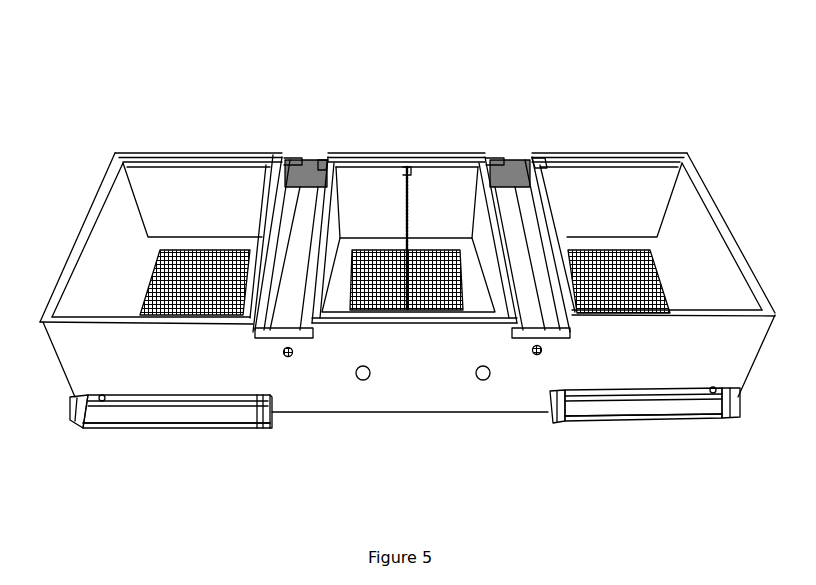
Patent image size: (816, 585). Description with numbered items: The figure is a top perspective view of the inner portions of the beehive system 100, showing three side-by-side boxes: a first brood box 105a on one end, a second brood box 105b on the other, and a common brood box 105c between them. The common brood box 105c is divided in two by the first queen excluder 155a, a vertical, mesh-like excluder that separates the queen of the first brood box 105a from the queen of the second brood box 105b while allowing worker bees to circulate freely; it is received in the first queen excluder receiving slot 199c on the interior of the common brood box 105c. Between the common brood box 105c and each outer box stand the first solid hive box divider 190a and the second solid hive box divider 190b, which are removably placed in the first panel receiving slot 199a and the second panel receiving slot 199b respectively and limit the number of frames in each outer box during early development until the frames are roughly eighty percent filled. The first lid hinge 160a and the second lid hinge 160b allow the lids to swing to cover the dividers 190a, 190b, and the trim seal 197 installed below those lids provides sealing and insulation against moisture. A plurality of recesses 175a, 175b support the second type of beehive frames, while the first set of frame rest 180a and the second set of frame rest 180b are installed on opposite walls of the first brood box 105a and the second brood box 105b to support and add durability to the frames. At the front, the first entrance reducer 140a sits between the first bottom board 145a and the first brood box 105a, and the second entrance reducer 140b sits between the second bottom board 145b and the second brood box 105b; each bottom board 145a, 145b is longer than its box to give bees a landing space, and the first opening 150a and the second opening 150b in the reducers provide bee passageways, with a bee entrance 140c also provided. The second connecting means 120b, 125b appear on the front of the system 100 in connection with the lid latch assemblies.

The beehive system 100 is at (78, 70).
The first brood box 105a is at (727, 357).
The second brood box 105b is at (220, 362).
The common brood box 105c is at (415, 345).
The second connecting means 120b is at (537, 356).
The second connecting means 125b is at (290, 358).
The first entrance reducer 140a is at (657, 390).
The second entrance reducer 140b is at (173, 400).
The bee entrance 140c is at (358, 367).
The first bottom board 145a is at (608, 418).
The second bottom board 145b is at (117, 428).
The first opening in the entrance reducer 150a is at (712, 388).
The second opening in the entrance reducer 150b is at (100, 397).
The first queen excluder 155a is at (407, 185).
The first lid hinge 160a is at (490, 157).
The second lid hinge 160b is at (303, 158).
The recess 175a is at (507, 167).
The recess 175b is at (282, 160).
The first set of frame rest 180a is at (630, 157).
The second set of frame rest 180b is at (178, 162).
The first solid hive box divider 190a is at (508, 233).
The second solid hive box divider 190b is at (300, 280).
The trim seal 197 is at (278, 242).
The first panel receiving slot 199a is at (543, 157).
The second panel receiving slot 199b is at (322, 165).
The first queen excluder receiving slot 199c is at (407, 185).